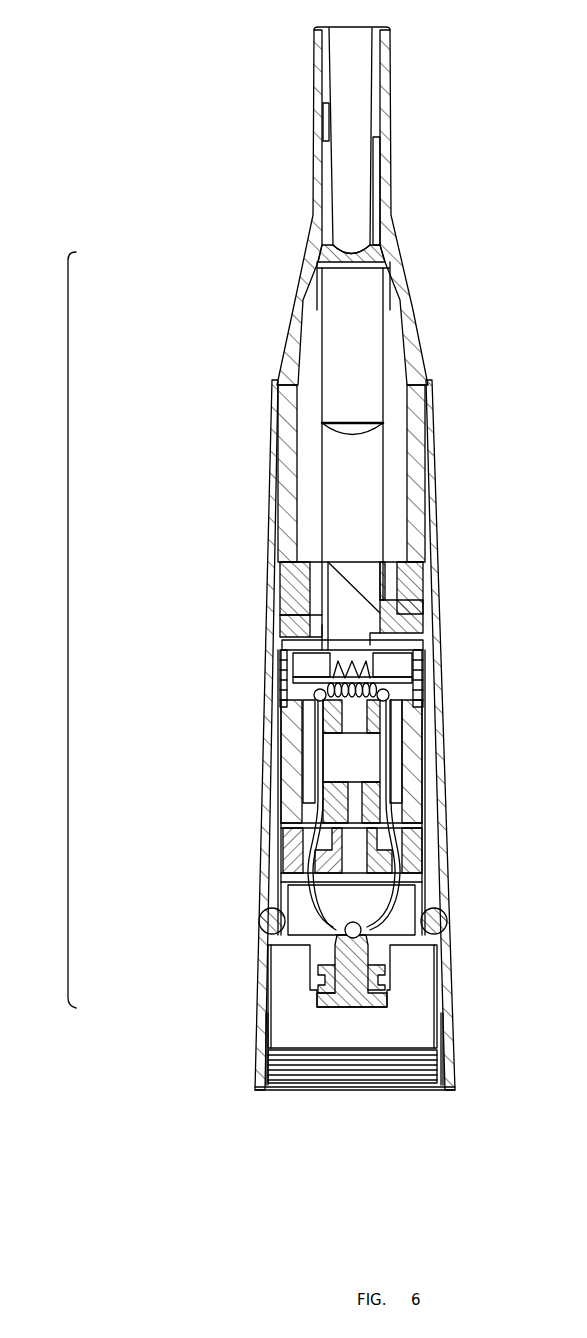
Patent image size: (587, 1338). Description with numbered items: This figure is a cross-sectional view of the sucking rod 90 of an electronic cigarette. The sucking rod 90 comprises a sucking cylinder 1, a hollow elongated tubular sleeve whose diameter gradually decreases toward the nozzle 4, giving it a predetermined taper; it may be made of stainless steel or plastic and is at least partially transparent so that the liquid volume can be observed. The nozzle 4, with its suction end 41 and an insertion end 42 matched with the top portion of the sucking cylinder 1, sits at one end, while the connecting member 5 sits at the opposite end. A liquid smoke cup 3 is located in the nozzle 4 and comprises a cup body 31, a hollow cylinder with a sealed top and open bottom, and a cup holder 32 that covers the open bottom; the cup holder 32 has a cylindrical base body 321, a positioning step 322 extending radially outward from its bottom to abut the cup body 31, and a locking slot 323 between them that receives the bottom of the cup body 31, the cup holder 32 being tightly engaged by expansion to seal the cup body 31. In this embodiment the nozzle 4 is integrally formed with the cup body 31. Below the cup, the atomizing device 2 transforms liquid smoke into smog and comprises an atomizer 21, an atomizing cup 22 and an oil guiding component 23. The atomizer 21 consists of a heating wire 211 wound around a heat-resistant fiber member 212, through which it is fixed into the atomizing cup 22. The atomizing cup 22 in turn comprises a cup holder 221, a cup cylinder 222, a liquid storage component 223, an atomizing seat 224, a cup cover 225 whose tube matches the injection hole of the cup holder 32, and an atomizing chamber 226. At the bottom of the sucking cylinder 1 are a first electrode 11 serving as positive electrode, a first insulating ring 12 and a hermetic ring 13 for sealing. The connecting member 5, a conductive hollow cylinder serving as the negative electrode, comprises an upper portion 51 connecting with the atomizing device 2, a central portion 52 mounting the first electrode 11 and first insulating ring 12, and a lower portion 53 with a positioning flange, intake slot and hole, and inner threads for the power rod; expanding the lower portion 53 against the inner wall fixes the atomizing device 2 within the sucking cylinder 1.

The sucking rod 90 is at (68, 656).
The sucking cylinder 1 is at (258, 889).
The nozzle 4 is at (123, 222).
The suction end 41 is at (352, 118).
The insertion end 42 is at (283, 378).
The liquid smoke cup 3 is at (123, 382).
The cup body 31 is at (307, 472).
The cup holder 32 is at (171, 445).
The base body 321 is at (297, 552).
The positioning step 322 is at (287, 627).
The locking slot 323 is at (290, 597).
The atomizing device 2 is at (123, 572).
The oil guiding component 23 is at (357, 653).
The atomizer 21 is at (297, 660).
The heating wire 211 is at (390, 697).
The fiber member 212 is at (393, 683).
The atomizing cup 22 is at (169, 652).
The cup cover 225 is at (303, 680).
The atomizing chamber 226 is at (327, 693).
The atomizing seat 224 is at (305, 726).
The liquid storage component 223 is at (295, 773).
The cup cylinder 222 is at (287, 815).
The cup holder 221 is at (295, 865).
The hermetic ring 13 is at (452, 928).
The connecting member 5 is at (129, 962).
The upper portion 51 is at (262, 930).
The central portion 52 is at (270, 953).
The lower portion 53 is at (270, 985).
The first electrode 11 is at (387, 1008).
The first insulating ring 12 is at (390, 968).